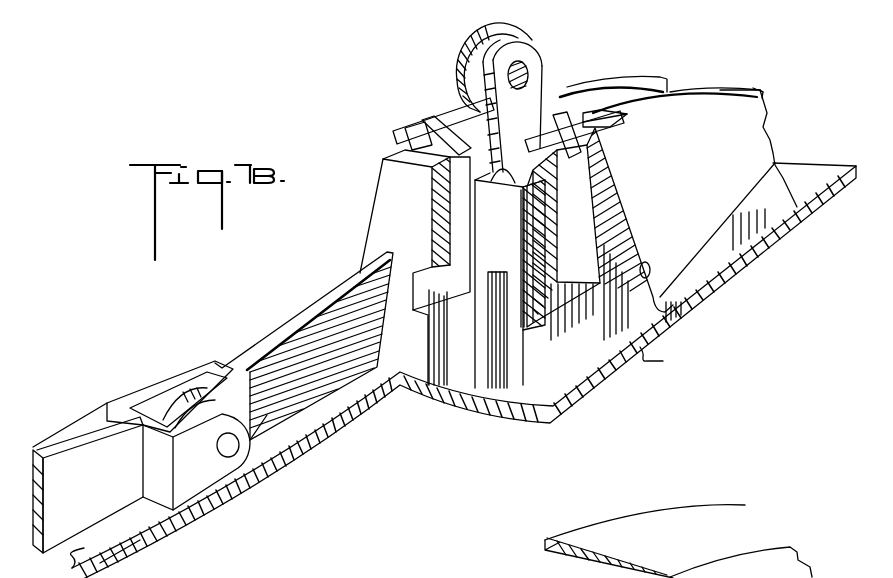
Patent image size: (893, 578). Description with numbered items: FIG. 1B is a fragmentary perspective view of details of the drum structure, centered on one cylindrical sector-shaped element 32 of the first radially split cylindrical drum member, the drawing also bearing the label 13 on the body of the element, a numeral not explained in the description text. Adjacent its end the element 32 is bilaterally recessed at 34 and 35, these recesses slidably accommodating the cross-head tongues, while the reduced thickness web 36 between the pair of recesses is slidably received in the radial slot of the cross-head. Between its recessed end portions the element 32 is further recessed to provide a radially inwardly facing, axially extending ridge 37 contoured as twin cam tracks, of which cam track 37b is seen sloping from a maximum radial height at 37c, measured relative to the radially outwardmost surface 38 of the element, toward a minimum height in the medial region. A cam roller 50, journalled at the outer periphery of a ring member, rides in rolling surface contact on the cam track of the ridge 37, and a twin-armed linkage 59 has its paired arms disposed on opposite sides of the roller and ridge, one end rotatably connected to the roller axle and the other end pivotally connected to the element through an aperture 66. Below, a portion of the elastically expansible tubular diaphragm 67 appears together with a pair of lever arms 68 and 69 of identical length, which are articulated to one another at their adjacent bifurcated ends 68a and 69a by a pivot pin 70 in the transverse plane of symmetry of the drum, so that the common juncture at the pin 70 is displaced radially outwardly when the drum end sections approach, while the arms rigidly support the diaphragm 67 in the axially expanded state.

The main body 13 is at (506, 246).
The cylindrical sector-shaped element 32 is at (578, 398).
The recess 34 is at (442, 215).
The recess 35 is at (513, 163).
The reduced thickness web 36 is at (430, 140).
The ridge 37 is at (660, 78).
The cam track 37b is at (747, 76).
The maximum radial height location 37c is at (622, 119).
The radially outwardmost surface 38 is at (666, 358).
The cam roller 50 is at (480, 34).
The twin-armed linkage 59 is at (530, 107).
The aperture 66 is at (650, 262).
The tubular diaphragm 67 is at (133, 550).
The lever arm 68 is at (298, 320).
The bifurcated end 68a is at (267, 415).
The lever arm 69 is at (67, 443).
The bifurcated end 69a is at (192, 488).
The pivot pin 70 is at (234, 453).